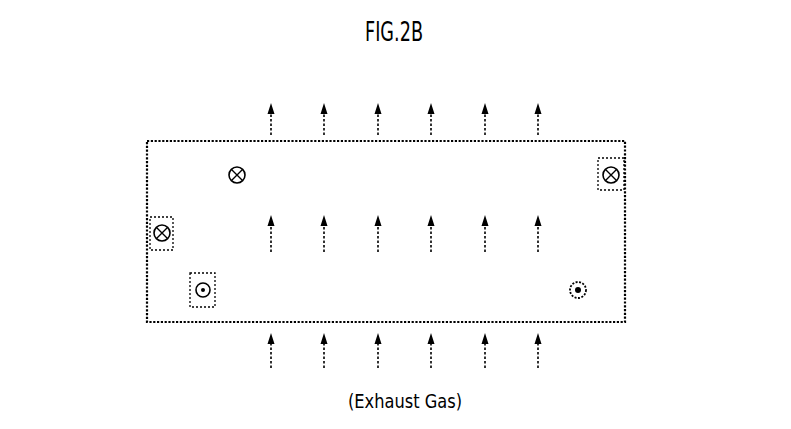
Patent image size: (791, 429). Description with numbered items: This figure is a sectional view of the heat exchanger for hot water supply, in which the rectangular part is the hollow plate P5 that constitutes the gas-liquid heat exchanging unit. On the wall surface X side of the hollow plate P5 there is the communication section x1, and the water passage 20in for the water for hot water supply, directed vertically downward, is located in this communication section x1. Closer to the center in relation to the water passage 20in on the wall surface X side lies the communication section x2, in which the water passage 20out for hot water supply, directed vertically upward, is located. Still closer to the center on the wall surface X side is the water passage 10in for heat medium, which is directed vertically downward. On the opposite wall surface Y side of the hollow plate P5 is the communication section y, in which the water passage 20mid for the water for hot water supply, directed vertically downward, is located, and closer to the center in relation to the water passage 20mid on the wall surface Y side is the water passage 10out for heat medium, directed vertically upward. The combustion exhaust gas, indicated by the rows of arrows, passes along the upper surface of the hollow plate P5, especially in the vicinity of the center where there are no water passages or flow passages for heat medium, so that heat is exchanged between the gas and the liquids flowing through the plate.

The water passage for heat medium 10in is at (232, 167).
The water passage for heat medium 10out is at (583, 297).
The water passage for hot water supply 20in is at (152, 237).
The water passage for hot water supply 20mid is at (622, 175).
The water passage for hot water supply 20out is at (198, 297).
The hollow plate P5 is at (626, 296).
The wall surface X is at (138, 304).
The wall surface Y is at (636, 258).
The communication section x1 is at (160, 217).
The communication section x2 is at (216, 304).
The communication section y is at (612, 158).